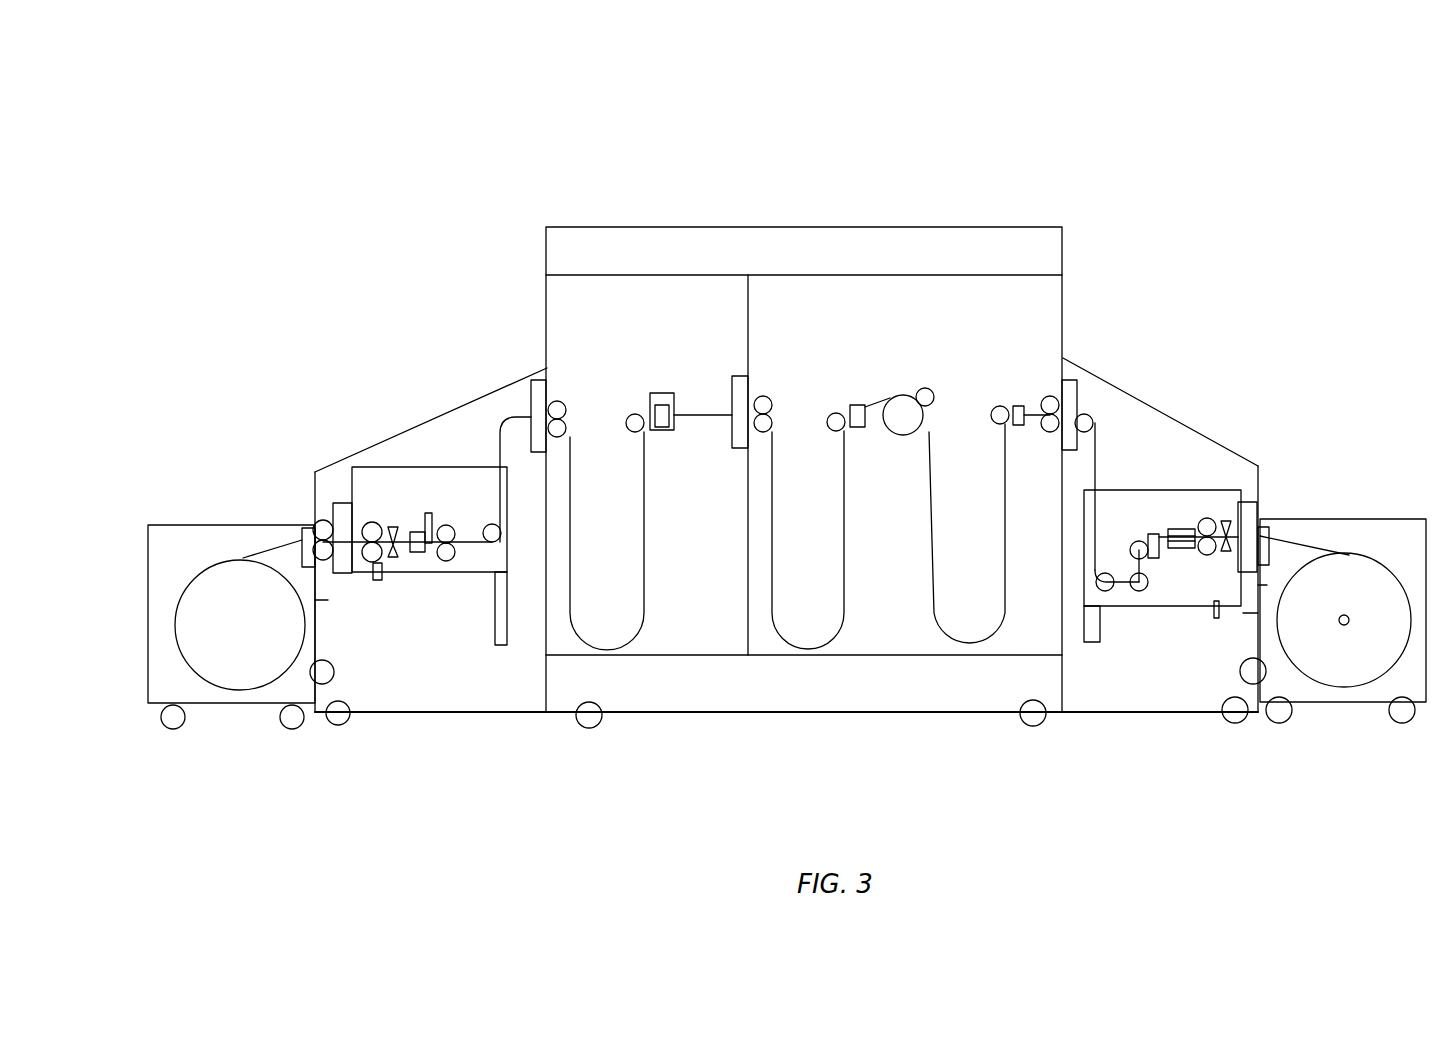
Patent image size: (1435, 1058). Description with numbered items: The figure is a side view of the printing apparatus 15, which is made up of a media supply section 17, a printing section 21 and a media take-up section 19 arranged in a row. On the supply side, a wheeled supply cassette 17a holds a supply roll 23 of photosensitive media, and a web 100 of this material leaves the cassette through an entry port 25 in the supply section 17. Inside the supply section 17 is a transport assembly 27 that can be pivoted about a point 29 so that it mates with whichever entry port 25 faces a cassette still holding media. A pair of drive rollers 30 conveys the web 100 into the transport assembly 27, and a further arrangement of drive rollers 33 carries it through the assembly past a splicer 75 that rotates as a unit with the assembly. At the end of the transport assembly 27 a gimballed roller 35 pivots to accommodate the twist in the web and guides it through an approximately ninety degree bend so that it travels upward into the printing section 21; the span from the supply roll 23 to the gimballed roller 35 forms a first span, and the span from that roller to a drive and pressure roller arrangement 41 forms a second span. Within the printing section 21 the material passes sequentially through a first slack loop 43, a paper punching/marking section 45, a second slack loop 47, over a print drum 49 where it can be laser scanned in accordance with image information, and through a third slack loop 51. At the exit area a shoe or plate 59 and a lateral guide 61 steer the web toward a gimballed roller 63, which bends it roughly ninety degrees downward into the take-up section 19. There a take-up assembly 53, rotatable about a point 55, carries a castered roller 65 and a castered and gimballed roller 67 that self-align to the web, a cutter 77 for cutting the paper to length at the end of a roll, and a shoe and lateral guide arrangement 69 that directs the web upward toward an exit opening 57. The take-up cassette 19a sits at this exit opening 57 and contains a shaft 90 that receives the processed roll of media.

The printing apparatus 15 is at (918, 182).
The printing section 21 is at (747, 227).
The supply cassette 17a is at (172, 532).
The supply roll 23 is at (240, 680).
The web 100 is at (270, 547).
The entry port 25 is at (307, 523).
The drive rollers 30 is at (327, 522).
The media supply section 17 is at (410, 712).
The transport assembly 27 is at (458, 478).
The splicer 75 is at (432, 517).
The drive rollers 33 is at (372, 562).
The gimballed roller 35 is at (490, 542).
The pivot point 29 is at (507, 645).
The drive and pressure roller arrangement 41 is at (565, 400).
The first slack loop 43 is at (627, 650).
The paper punching/marking section 45 is at (662, 393).
The second slack loop 47 is at (820, 650).
The print drum 49 is at (900, 396).
The third slack loop 51 is at (987, 648).
The shoe or plate 59 is at (1000, 405).
The lateral guide 61 is at (1020, 405).
The gimballed roller 63 is at (1085, 414).
The media take-up section 19 is at (1175, 695).
The take-up assembly 53 is at (1185, 497).
The castered roller 65 is at (1107, 573).
The castered and gimballed roller 67 is at (1140, 592).
The shoe and lateral guide arrangement 69 is at (1150, 530).
The cutter 77 is at (1230, 512).
The exit opening 57 is at (1262, 528).
The pivot point 55 is at (1091, 642).
The take-up cassette 19a is at (1360, 526).
The shaft 90 is at (1344, 625).